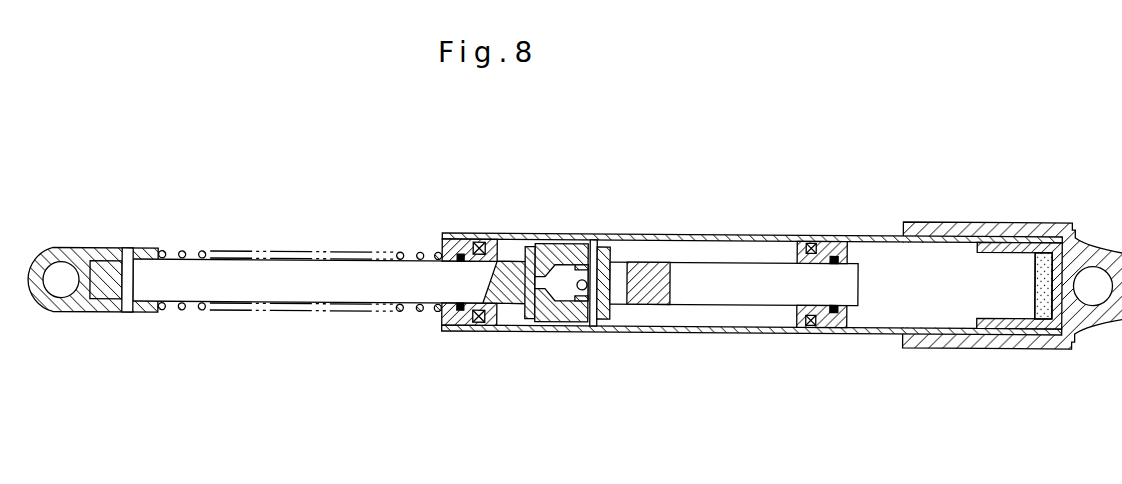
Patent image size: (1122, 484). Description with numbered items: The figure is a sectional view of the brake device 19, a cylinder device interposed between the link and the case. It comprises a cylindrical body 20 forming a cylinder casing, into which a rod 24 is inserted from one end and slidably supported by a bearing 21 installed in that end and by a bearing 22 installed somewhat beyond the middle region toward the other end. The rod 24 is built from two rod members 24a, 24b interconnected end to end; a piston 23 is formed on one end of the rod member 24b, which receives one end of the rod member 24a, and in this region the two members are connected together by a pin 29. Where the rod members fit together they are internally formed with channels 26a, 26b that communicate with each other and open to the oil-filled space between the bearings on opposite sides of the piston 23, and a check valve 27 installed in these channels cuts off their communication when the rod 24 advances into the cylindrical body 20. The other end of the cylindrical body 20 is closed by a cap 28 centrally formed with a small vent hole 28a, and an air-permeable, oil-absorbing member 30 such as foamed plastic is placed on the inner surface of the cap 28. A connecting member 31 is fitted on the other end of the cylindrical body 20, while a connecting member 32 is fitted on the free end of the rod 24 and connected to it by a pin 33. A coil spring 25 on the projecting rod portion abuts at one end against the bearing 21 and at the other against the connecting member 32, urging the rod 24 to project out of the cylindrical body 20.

The brake device 19 is at (574, 261).
The cylindrical body 20 is at (702, 236).
The bearing 21 is at (458, 234).
The bearing 22 is at (828, 238).
The piston 23 is at (576, 278).
The rod 24 is at (328, 275).
The rod member 24a is at (733, 334).
The rod member 24b is at (300, 288).
The coil spring 25 is at (200, 308).
The channel 26a is at (626, 293).
The channel 26b is at (530, 318).
The check valve 27 is at (588, 238).
The cap 28 is at (1010, 244).
The vent hole 28a is at (1085, 248).
The pin 29 is at (594, 320).
The member 30 is at (1035, 298).
The connecting member 31 is at (1048, 345).
The connecting member 32 is at (72, 310).
The pin 33 is at (125, 300).